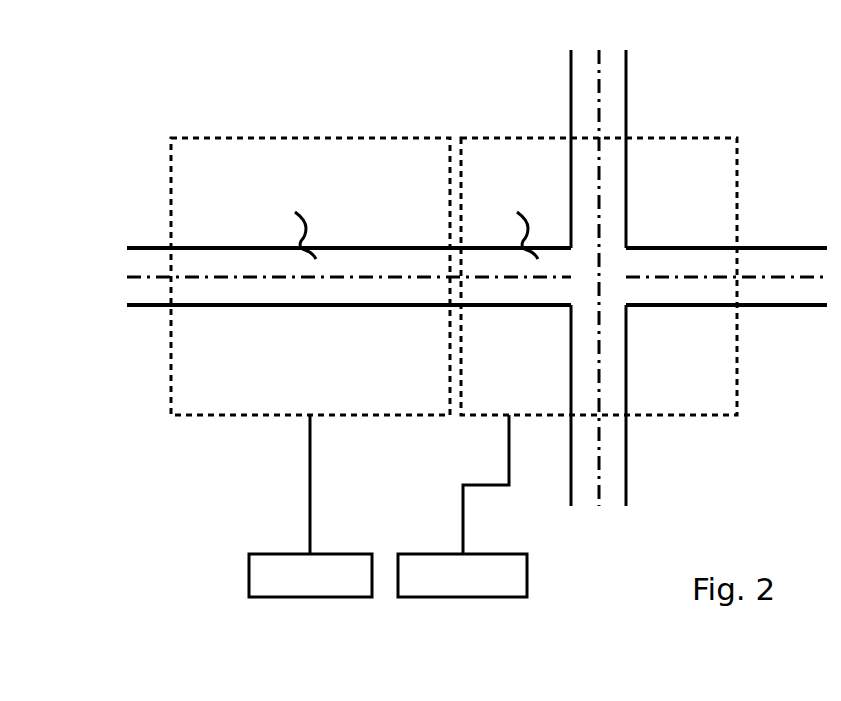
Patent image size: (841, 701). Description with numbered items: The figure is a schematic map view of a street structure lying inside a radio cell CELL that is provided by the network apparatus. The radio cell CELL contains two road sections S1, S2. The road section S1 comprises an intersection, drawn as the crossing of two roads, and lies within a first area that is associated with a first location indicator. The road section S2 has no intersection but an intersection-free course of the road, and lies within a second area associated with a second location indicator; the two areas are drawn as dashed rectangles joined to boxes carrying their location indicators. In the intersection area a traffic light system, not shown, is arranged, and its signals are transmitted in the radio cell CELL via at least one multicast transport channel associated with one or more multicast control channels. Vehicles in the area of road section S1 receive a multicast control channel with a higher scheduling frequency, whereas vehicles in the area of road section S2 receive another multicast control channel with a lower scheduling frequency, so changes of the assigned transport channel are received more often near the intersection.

The radio cell CELL is at (386, 58).
The road section S2 is at (293, 217).
The road section S1 is at (515, 217).